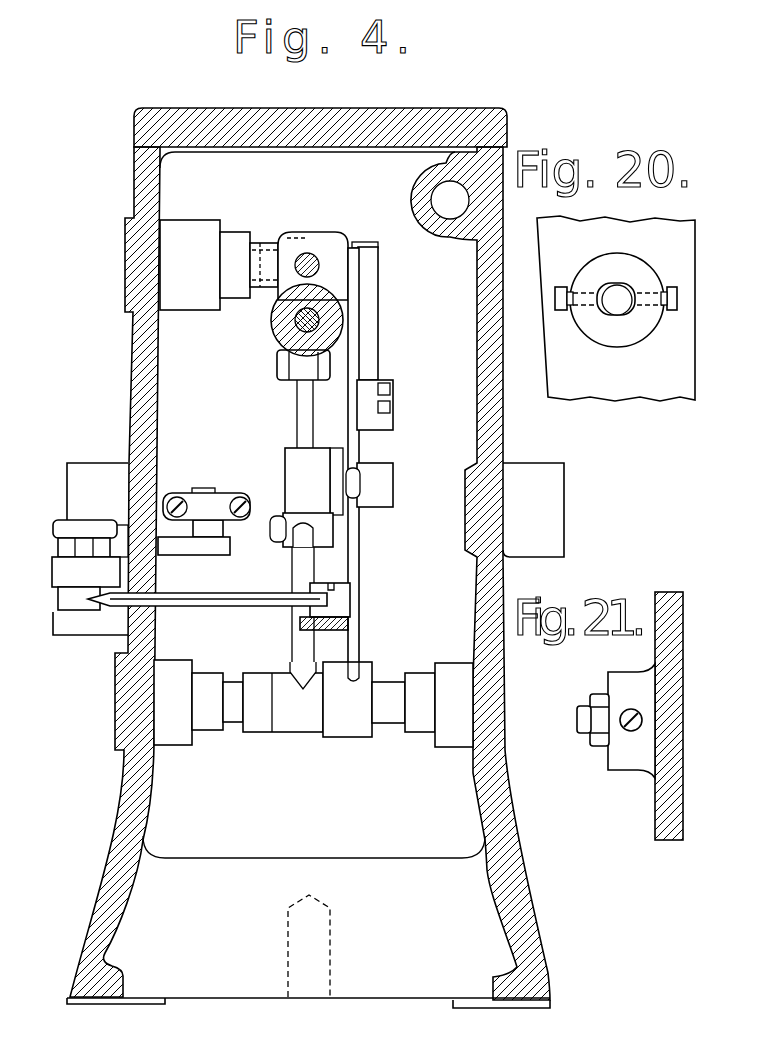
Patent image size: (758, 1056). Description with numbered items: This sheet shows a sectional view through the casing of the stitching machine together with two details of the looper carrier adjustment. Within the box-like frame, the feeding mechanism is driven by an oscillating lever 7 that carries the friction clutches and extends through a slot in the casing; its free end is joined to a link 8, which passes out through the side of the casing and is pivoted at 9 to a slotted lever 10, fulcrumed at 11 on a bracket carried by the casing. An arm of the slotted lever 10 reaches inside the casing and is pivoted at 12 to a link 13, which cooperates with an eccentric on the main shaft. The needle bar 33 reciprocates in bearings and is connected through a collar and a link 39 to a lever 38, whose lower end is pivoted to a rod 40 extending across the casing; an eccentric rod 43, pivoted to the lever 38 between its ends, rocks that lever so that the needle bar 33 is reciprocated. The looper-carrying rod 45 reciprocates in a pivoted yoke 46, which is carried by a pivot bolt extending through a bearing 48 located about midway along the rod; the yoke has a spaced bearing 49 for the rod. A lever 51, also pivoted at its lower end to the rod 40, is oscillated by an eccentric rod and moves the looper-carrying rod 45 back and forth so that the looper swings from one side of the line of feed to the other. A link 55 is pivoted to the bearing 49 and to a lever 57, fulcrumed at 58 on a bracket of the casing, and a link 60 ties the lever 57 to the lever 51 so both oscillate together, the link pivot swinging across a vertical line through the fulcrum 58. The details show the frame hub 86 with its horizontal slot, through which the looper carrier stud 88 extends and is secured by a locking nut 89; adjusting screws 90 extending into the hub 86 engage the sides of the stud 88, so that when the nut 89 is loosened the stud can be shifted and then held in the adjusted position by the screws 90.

In FIG. 4, the oscillating lever 7 is at (300, 625).
In FIG. 4, the link 8 is at (228, 607).
In FIG. 4, the pivot 9 is at (78, 548).
In FIG. 4, the slotted lever 10 is at (60, 572).
In FIG. 4, the fulcrum 11 is at (70, 520).
In FIG. 4, the pivot 12 is at (210, 537).
In FIG. 4, the link 13 is at (210, 503).
In FIG. 4, the needle bar 33 is at (286, 325).
In FIG. 4, the lever 38 is at (300, 415).
In FIG. 4, the link 39 is at (290, 370).
In FIG. 4, the rod 40 is at (388, 697).
In FIG. 4, the eccentric rod 43 is at (283, 540).
In FIG. 4, the looper-carrying rod 45 is at (311, 262).
In FIG. 4, the pivoted yoke 46 is at (232, 246).
In FIG. 4, the bearing 48 is at (190, 265).
In FIG. 4, the bearing 49 is at (290, 248).
In FIG. 4, the lever 51 is at (349, 296).
In FIG. 4, the link 55 is at (368, 307).
In FIG. 4, the lever 57 is at (343, 442).
In FIG. 4, the fulcrum 58 is at (350, 492).
In FIG. 4, the link 60 is at (375, 405).
In FIG. 20, the hub 86 is at (633, 335).
In FIG. 21, the hub 86 is at (622, 768).
In FIG. 20, the looper carrier stud 88 is at (620, 293).
In FIG. 21, the looper carrier stud 88 is at (580, 734).
In FIG. 21, the locking nut 89 is at (598, 694).
In FIG. 20, the adjusting screws 90 is at (560, 286).
In FIG. 21, the adjusting screws 90 is at (631, 709).